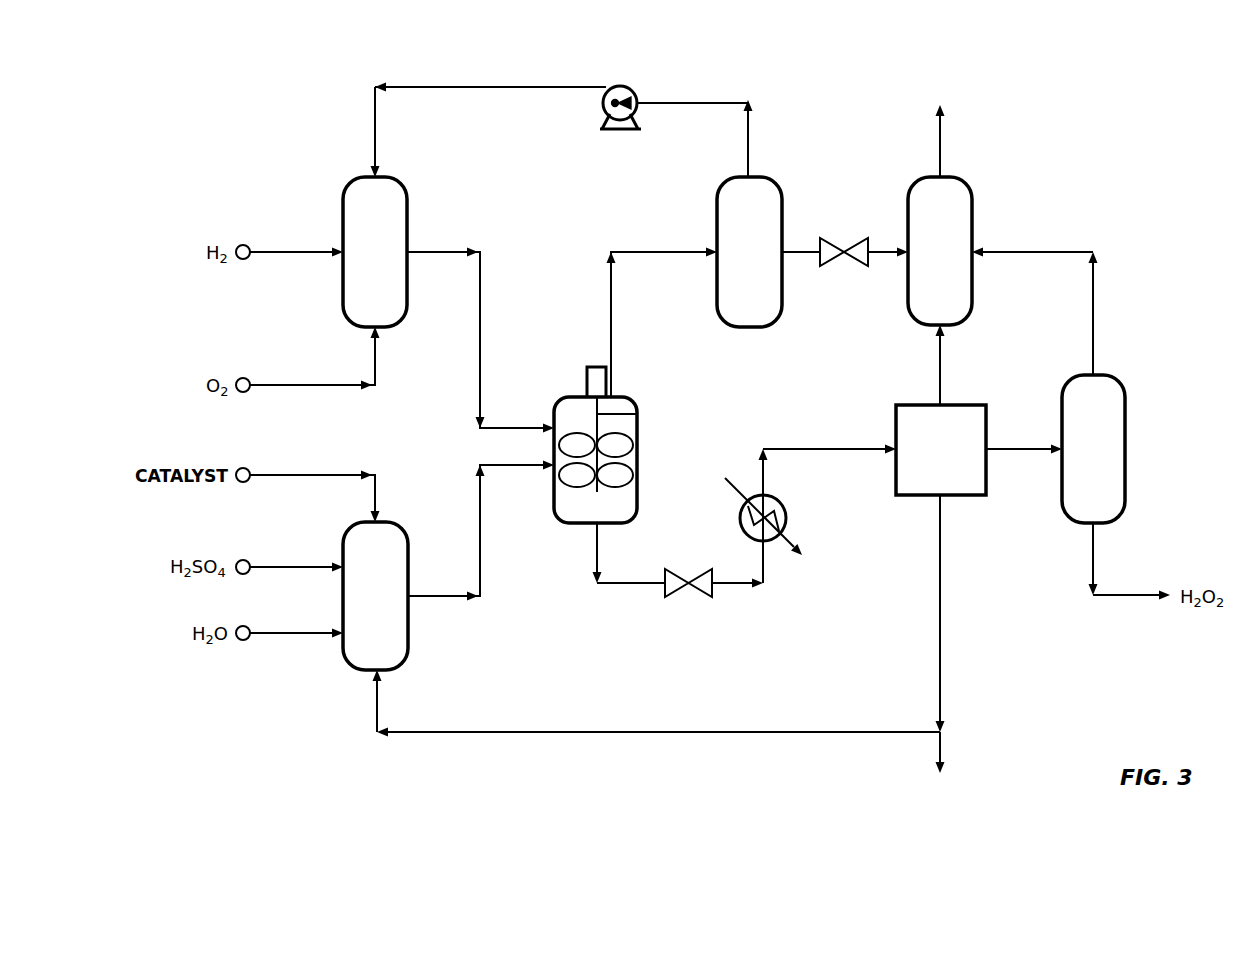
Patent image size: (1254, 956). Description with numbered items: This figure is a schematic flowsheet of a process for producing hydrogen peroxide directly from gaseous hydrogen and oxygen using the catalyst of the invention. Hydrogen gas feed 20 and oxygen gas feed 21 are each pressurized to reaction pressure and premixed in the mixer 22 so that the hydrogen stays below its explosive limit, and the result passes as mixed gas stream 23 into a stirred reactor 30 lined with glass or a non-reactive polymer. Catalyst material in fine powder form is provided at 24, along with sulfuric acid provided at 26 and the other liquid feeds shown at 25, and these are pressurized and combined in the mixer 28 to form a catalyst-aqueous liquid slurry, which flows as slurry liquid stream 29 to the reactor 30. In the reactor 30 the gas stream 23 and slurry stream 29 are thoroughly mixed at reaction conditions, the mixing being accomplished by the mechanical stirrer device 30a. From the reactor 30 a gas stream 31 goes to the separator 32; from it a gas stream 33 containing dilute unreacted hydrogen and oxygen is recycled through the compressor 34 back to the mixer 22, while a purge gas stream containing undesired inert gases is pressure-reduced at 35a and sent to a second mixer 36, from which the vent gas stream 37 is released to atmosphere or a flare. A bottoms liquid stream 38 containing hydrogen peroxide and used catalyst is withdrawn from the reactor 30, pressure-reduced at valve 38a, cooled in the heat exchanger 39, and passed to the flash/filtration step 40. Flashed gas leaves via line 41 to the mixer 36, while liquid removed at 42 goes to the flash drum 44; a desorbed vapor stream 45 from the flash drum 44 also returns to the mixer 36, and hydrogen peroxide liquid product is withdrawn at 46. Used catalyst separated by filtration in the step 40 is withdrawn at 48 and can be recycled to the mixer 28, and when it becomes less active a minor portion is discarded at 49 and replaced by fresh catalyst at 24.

The hydrogen gas feed 20 is at (300, 250).
The oxygen gas feed 21 is at (302, 385).
The mixer 22 is at (398, 177).
The mixed gas stream 23 is at (483, 326).
The catalyst feed 24 is at (313, 472).
The sulfuric acid feed line 25 is at (297, 565).
The acid feed 26 is at (290, 635).
The mixer 28 is at (405, 522).
The slurry liquid stream 29 is at (480, 572).
The stirred reactor 30 is at (634, 442).
The mechanical stirrer device 30a is at (637, 414).
The gas stream 31 is at (611, 280).
The separator 32 is at (768, 177).
The gas stream 33 is at (716, 100).
The recycle compressor / pump 34 is at (640, 87).
The pressure-reducing valve 35a is at (845, 268).
The second mixer 36 is at (958, 177).
The vent gas stream 37 is at (940, 135).
The bottoms liquid stream 38 is at (597, 549).
The valve 38a is at (690, 597).
The heat exchanger 39 is at (741, 516).
The flash/filtration step 40 is at (898, 405).
The gas line to separator 41 is at (940, 381).
The liquid stream 42 is at (1015, 450).
The flash drum 44 is at (1110, 375).
The desorbed vapor stream 45 is at (1093, 289).
The hydrogen peroxide liquid product 46 is at (1136, 597).
The used catalyst stream 48 is at (940, 641).
The catalyst discard stream 49 is at (942, 753).